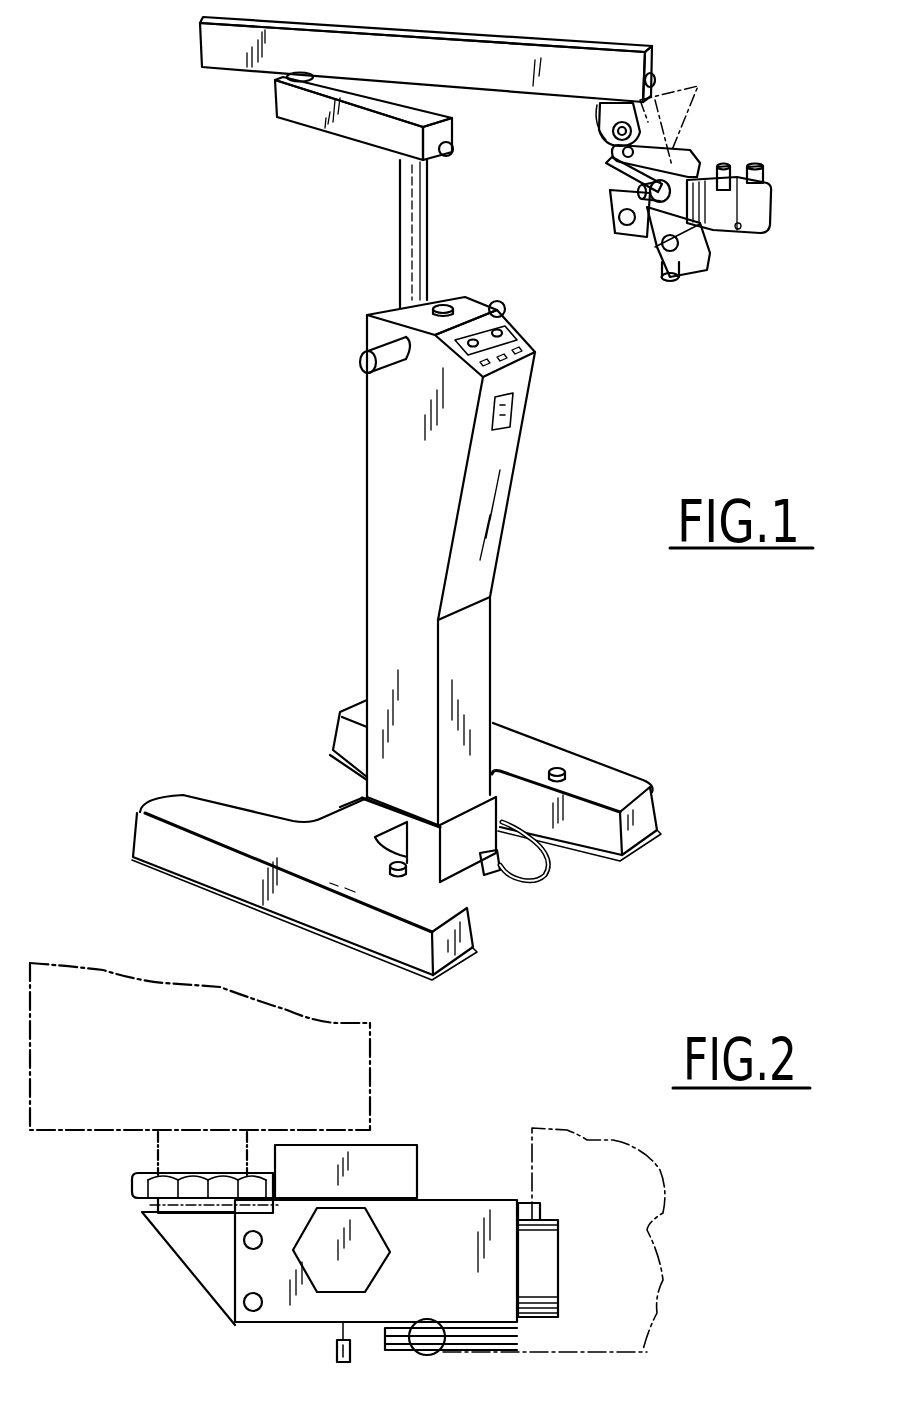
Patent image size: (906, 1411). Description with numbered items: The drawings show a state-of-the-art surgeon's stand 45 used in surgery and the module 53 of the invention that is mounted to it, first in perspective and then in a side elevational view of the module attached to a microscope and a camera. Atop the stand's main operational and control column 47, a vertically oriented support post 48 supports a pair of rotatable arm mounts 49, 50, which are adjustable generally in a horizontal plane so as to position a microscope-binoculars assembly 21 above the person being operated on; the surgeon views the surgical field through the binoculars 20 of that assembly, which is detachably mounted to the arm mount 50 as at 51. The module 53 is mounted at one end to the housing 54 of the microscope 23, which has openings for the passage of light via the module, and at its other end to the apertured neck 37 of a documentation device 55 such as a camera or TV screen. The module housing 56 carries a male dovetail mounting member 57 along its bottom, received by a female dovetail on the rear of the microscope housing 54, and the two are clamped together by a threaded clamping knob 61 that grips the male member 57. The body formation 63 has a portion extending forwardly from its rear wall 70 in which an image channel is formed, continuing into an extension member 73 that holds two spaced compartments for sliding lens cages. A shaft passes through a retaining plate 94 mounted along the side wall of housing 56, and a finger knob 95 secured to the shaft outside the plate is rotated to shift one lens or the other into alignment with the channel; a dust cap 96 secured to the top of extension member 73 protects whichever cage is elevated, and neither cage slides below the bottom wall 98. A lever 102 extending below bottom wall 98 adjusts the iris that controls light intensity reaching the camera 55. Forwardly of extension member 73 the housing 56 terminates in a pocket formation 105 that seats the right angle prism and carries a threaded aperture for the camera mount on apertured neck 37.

In FIG. 1, the binoculars 20 is at (730, 207).
In FIG. 1, the microscope-binoculars assembly 21 is at (788, 246).
In FIG. 1, the microscope 23 is at (700, 258).
In FIG. 2, the apertured neck 37 is at (157, 1143).
In FIG. 1, the surgeon's stand 45 is at (396, 638).
In FIG. 1, the main operational and control column 47 is at (377, 433).
In FIG. 1, the support post 48 is at (403, 210).
In FIG. 1, the arm mount 49 is at (375, 142).
In FIG. 1, the arm mount 50 is at (479, 33).
In FIG. 1, the mounting location 51 is at (597, 115).
In FIG. 1, the module 53 is at (646, 230).
In FIG. 2, the module 53 is at (172, 1336).
In FIG. 1, the microscope housing 54 is at (653, 240).
In FIG. 2, the microscope housing 54 is at (613, 1140).
In FIG. 1, the documentation device 55 is at (693, 77).
In FIG. 2, the documentation device 55 is at (373, 1053).
In FIG. 2, the housing 56 is at (549, 1235).
In FIG. 2, the male dovetail mounting member 57 is at (511, 1359).
In FIG. 1, the threaded clamping knob 61 is at (637, 233).
In FIG. 2, the threaded clamping knob 61 is at (423, 1363).
In FIG. 2, the body formation 63 is at (457, 1198).
In FIG. 2, the rear wall 70 is at (520, 1207).
In FIG. 2, the extension member 73 is at (151, 1266).
In FIG. 2, the retaining plate 94 is at (368, 1255).
In FIG. 2, the finger knob 95 is at (390, 1252).
In FIG. 2, the dust cap 96 is at (417, 1143).
In FIG. 2, the bottom wall 98 is at (273, 1327).
In FIG. 2, the lever 102 is at (345, 1362).
In FIG. 2, the pocket formation 105 is at (143, 1220).